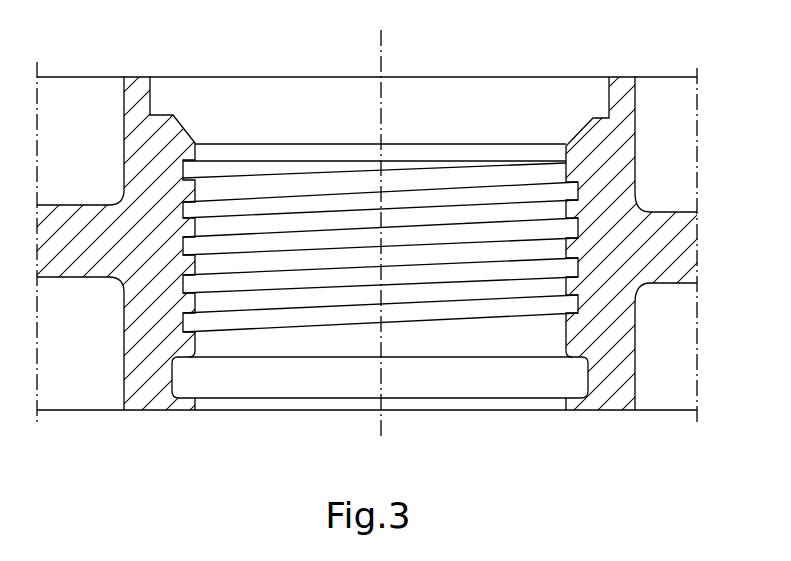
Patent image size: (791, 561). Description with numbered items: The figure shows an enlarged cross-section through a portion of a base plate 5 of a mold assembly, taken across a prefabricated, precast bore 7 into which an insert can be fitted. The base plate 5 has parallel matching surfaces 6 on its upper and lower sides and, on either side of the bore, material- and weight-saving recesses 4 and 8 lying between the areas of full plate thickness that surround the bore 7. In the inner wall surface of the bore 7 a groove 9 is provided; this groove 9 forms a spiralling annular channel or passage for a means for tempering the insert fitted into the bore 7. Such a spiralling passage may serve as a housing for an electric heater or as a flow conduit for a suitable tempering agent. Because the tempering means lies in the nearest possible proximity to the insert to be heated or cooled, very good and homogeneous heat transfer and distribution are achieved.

The material-saving recess 4 is at (677, 125).
The base plate 5 is at (680, 253).
The matching surface 6 is at (511, 77).
The precast bore 7 is at (365, 345).
The material-saving recess 8 is at (102, 92).
The groove 9 is at (191, 213).